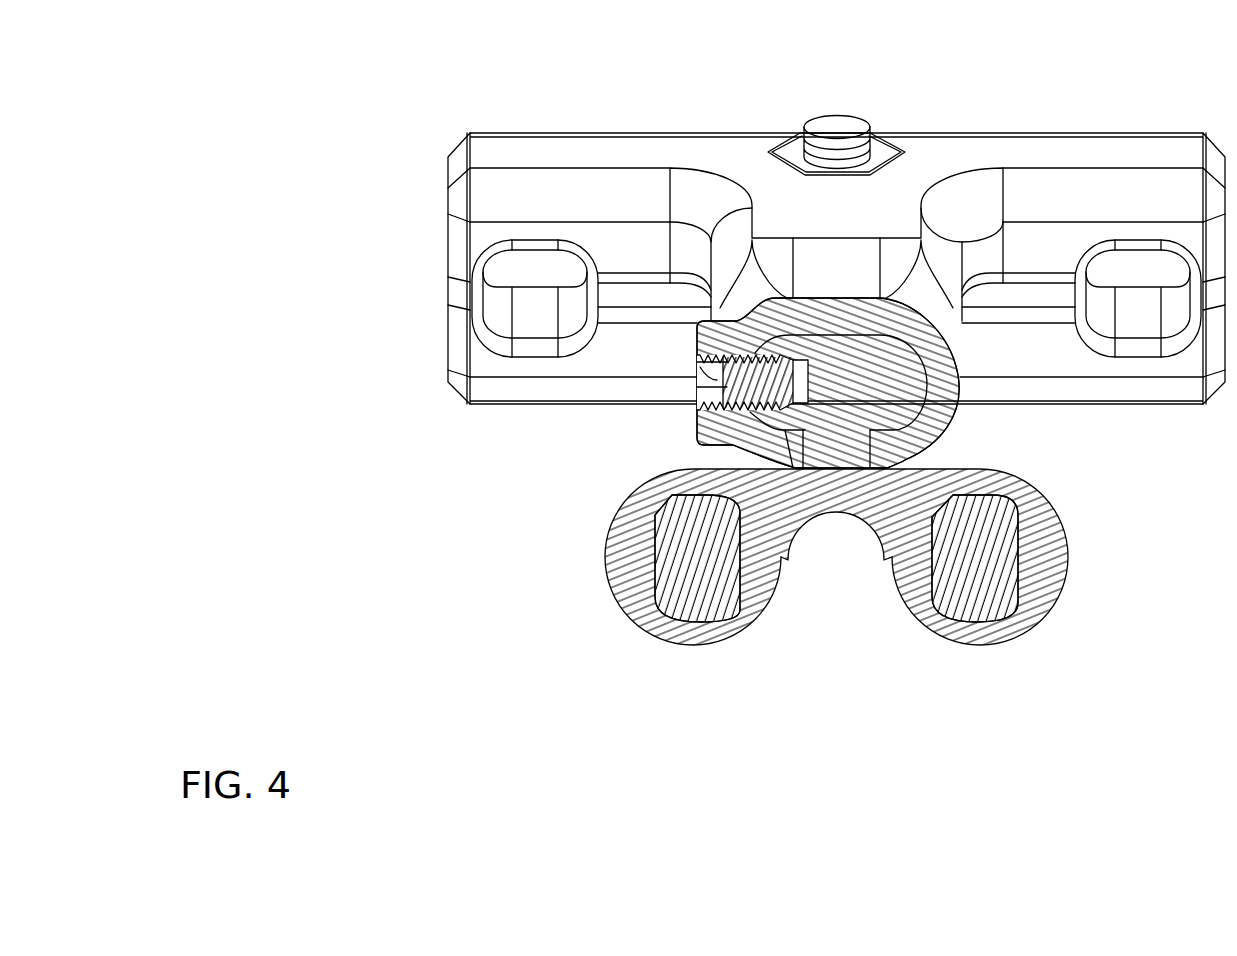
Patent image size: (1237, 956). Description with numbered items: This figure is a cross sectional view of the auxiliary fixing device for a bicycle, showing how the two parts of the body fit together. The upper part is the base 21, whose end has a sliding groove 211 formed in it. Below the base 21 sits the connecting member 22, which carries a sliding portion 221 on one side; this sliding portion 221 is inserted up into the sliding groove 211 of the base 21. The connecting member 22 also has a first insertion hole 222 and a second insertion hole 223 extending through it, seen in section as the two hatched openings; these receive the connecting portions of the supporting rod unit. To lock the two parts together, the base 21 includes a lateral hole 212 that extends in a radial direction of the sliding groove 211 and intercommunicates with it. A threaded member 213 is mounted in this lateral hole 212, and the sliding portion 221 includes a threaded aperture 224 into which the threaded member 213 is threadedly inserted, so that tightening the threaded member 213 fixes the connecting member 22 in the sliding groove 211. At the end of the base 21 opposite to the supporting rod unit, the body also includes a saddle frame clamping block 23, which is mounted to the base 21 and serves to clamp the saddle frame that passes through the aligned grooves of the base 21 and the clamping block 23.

The base 21 is at (782, 213).
The sliding groove 211 is at (891, 297).
The lateral hole 212 is at (703, 375).
The threaded member 213 is at (710, 385).
The connecting member 22 is at (618, 510).
The sliding portion 221 is at (947, 405).
The first insertion hole 222 is at (738, 572).
The second insertion hole 223 is at (937, 580).
The threaded aperture 224 is at (787, 432).
The saddle frame clamping block 23 is at (1153, 385).